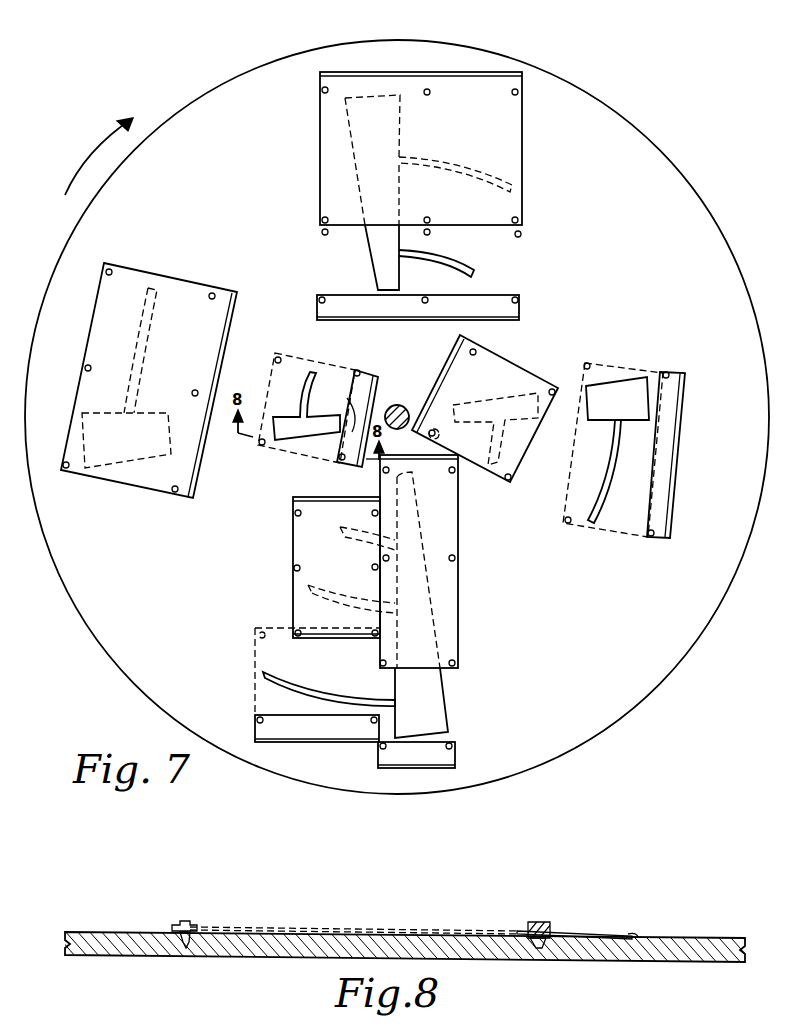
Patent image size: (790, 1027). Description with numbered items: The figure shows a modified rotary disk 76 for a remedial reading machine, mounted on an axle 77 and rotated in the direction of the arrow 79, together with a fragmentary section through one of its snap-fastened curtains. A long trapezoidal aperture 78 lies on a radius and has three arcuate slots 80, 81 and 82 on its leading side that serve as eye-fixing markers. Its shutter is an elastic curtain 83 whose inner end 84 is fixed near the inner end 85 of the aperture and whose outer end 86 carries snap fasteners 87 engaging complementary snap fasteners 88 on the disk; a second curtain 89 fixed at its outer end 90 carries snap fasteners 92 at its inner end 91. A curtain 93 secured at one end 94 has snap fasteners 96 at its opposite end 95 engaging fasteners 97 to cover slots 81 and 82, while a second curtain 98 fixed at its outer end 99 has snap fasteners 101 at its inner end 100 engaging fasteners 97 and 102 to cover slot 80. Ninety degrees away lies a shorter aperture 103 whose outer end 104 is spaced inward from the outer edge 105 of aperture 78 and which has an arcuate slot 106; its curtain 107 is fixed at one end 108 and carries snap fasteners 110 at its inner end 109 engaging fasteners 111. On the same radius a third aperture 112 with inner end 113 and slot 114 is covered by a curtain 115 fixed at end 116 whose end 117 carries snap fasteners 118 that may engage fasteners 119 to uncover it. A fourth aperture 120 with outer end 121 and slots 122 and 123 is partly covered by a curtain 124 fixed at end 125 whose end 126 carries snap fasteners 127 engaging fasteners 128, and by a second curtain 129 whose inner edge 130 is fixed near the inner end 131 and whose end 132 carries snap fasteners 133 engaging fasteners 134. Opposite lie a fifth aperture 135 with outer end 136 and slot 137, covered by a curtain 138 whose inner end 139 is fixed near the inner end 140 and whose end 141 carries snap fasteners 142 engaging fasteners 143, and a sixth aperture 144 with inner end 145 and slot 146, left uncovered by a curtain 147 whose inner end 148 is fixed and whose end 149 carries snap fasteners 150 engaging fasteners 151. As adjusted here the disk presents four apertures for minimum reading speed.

In FIG. 7, the rotary disk 76 is at (678, 667).
In FIG. 8, the rotary disk 76 is at (726, 961).
In FIG. 7, the axle 77 is at (405, 410).
In FIG. 7, the elongated trapezoidal shaped aperture 78 is at (447, 704).
In FIG. 7, the arrow 79 is at (82, 172).
In FIG. 7, the arcuate slot 80 is at (280, 678).
In FIG. 7, the arcuate slot 81 is at (332, 593).
In FIG. 7, the arcuate slot 82 is at (340, 540).
In FIG. 7, the curtain 83 is at (420, 587).
In FIG. 7, the inner end of curtain 84 is at (430, 456).
In FIG. 7, the inner end of aperture 85 is at (418, 570).
In FIG. 7, the outer end of curtain 86 is at (441, 670).
In FIG. 7, the snap fasteners 87 is at (458, 658).
In FIG. 7, the complementary snap fasteners 88 is at (458, 562).
In FIG. 7, the second curtain 89 is at (417, 767).
In FIG. 7, the outer end of second curtain 90 is at (416, 768).
In FIG. 7, the inner end of second curtain 91 is at (448, 732).
In FIG. 7, the snap fasteners 92 is at (452, 746).
In FIG. 7, the curtain 93 is at (323, 567).
In FIG. 7, the end of curtain 94 is at (303, 497).
In FIG. 7, the opposite end of curtain 95 is at (330, 638).
In FIG. 7, the snap fasteners 96 is at (295, 634).
In FIG. 7, the complementary snap fasteners 97 is at (293, 568).
In FIG. 7, the second curtain 98 is at (257, 720).
In FIG. 7, the outer end of second curtain 99 is at (301, 684).
In FIG. 7, the inner end of second curtain 100 is at (302, 715).
In FIG. 7, the snap fasteners 101 is at (370, 720).
In FIG. 7, the snap fasteners 102 is at (262, 632).
In FIG. 7, the second elongated trapezoidal aperture 103 is at (612, 444).
In FIG. 7, the outer end of aperture 104 is at (618, 450).
In FIG. 7, the outer edge of aperture 105 is at (414, 736).
In FIG. 7, the arcuate slot 106 is at (606, 480).
In FIG. 7, the curtain 107 is at (660, 540).
In FIG. 7, the end of curtain 108 is at (670, 459).
In FIG. 7, the inner end of curtain 109 is at (651, 457).
In FIG. 7, the snap fasteners 110 is at (667, 372).
In FIG. 7, the complementary snap fasteners 111 is at (588, 362).
In FIG. 7, the third elongated aperture 112 is at (468, 403).
In FIG. 7, the inner end of aperture 113 is at (455, 412).
In FIG. 7, the arcuate slot 114 is at (490, 448).
In FIG. 7, the curtain 115 is at (494, 419).
In FIG. 7, the end of curtain 116 is at (447, 362).
In FIG. 7, the opposite end of curtain 117 is at (540, 440).
In FIG. 7, the snap fasteners 118 is at (553, 390).
In FIG. 7, the complementary snap fasteners 119 is at (476, 350).
In FIG. 7, the fourth elongated aperture 120 is at (366, 240).
In FIG. 7, the outer end of aperture 121 is at (370, 100).
In FIG. 7, the arcuate slot 122 is at (445, 160).
In FIG. 7, the arcuate slot 123 is at (437, 257).
In FIG. 7, the curtain 124 is at (443, 168).
In FIG. 7, the end of curtain 125 is at (407, 72).
In FIG. 7, the opposite end of curtain 126 is at (485, 225).
In FIG. 7, the snap fasteners 127 is at (518, 220).
In FIG. 7, the complementary snap fasteners 128 is at (518, 92).
In FIG. 7, the second curtain 129 is at (440, 309).
In FIG. 7, the inner edge of second curtain 130 is at (373, 320).
In FIG. 7, the inner end of aperture 131 is at (386, 290).
In FIG. 7, the opposite end of second curtain 132 is at (450, 296).
In FIG. 7, the snap fasteners 133 is at (518, 298).
In FIG. 7, the complementary snap fasteners 134 is at (521, 235).
In FIG. 7, the fifth elongated aperture 135 is at (168, 413).
In FIG. 7, the outer end of aperture 136 is at (88, 436).
In FIG. 7, the arcuate slot 137 is at (142, 332).
In FIG. 7, the curtain 138 is at (138, 490).
In FIG. 7, the inner end of curtain 139 is at (202, 440).
In FIG. 7, the inner end of aperture 140 is at (136, 430).
In FIG. 7, the opposite end of curtain 141 is at (140, 388).
In FIG. 7, the snap fasteners 142 is at (111, 270).
In FIG. 7, the complementary snap fasteners 143 is at (180, 495).
In FIG. 7, the sixth elongated aperture 144 is at (308, 405).
In FIG. 7, the inner end of aperture 145 is at (346, 408).
In FIG. 8, the inner end of aperture 145 is at (500, 945).
In FIG. 7, the arcuate slot 146 is at (313, 372).
In FIG. 7, the curtain 147 is at (352, 468).
In FIG. 8, the curtain 147 is at (590, 931).
In FIG. 7, the inner end of curtain 148 is at (390, 400).
In FIG. 8, the inner end of curtain 148 is at (636, 934).
In FIG. 7, the opposite end of curtain 149 is at (354, 442).
In FIG. 7, the snap fasteners 150 is at (345, 420).
In FIG. 8, the snap fasteners 150 is at (186, 921).
In FIG. 7, the snap fasteners 151 is at (286, 355).
In FIG. 8, the snap fasteners 151 is at (186, 945).